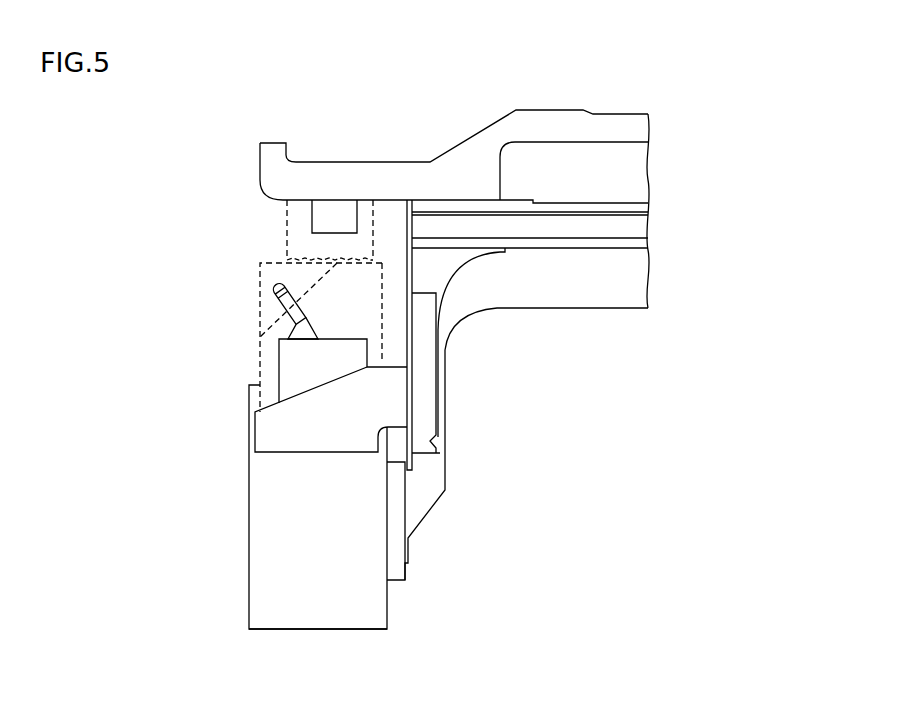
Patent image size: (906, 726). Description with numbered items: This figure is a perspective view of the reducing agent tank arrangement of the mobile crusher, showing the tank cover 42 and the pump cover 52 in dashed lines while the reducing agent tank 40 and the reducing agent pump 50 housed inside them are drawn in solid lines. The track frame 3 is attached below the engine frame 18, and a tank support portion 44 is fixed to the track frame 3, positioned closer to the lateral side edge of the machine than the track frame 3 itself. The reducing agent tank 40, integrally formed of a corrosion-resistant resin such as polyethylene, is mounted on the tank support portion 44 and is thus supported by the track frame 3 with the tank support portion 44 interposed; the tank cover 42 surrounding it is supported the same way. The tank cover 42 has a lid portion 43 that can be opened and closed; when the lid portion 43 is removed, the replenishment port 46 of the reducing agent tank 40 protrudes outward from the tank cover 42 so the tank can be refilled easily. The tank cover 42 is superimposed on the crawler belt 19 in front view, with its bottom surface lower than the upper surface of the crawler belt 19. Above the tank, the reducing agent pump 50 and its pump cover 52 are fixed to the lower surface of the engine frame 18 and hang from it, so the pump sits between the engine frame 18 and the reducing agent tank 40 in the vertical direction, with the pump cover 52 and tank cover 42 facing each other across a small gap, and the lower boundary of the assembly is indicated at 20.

The engine frame 18 is at (528, 128).
The track frame 3 is at (420, 403).
The reducing agent pump 50 is at (328, 218).
The pump cover 52 is at (284, 249).
The lid portion 43 is at (260, 285).
The replenishment port 46 is at (283, 298).
The tank cover 42 is at (258, 353).
The reducing agent tank 40 is at (295, 377).
The tank support portion 44 is at (283, 432).
The crawler belt 19 is at (285, 547).
The bottom plate 20 is at (317, 630).